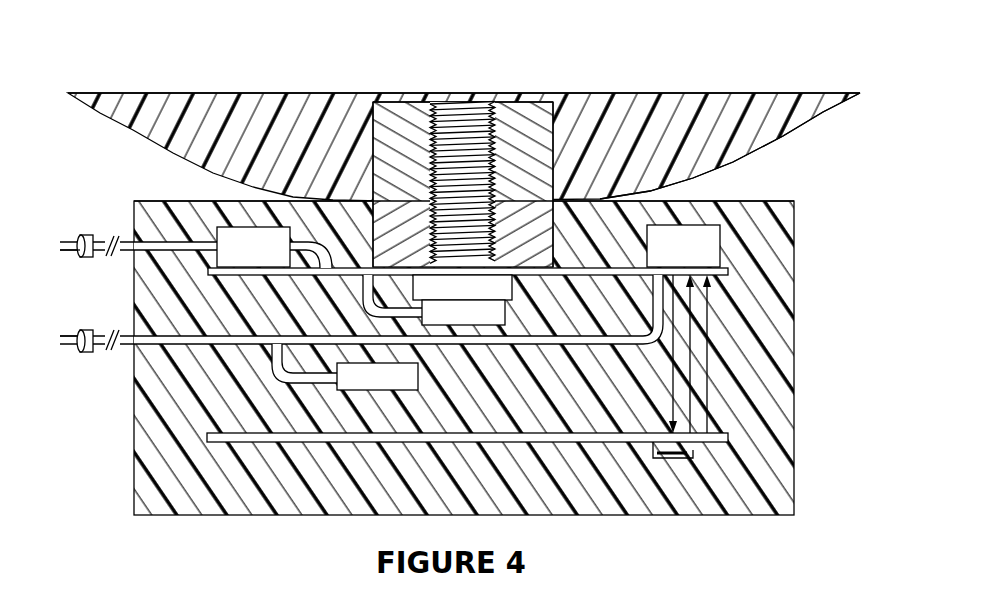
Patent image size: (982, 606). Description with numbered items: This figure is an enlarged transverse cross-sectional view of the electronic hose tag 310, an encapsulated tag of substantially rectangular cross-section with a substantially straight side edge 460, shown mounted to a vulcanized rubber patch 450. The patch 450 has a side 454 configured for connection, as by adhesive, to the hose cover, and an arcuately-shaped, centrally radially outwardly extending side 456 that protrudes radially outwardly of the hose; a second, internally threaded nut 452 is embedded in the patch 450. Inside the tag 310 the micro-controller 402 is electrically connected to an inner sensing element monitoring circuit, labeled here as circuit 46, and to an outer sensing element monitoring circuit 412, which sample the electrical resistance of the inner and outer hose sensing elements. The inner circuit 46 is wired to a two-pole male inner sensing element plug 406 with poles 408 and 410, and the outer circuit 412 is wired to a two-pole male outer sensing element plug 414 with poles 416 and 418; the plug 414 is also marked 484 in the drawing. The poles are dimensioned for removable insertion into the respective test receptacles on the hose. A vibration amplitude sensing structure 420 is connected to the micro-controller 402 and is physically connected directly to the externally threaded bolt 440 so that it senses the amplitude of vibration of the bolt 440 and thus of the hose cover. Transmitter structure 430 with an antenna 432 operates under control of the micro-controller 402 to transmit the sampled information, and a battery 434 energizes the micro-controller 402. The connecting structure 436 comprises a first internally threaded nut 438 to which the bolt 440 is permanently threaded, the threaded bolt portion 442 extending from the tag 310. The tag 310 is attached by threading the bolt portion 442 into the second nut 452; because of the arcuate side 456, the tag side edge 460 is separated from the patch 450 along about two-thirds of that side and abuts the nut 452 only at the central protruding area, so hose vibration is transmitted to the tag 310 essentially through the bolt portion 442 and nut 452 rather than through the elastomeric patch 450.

The electronic hose tag 310 is at (807, 232).
The vulcanized rubber patch 450 is at (697, 82).
The side of patch 454 is at (820, 92).
The arcuately-shaped side of patch 456 is at (796, 132).
The side edge of tag 460 is at (163, 201).
The micro-controller 402 is at (371, 196).
The connecting structure 436 is at (452, 68).
The second internally threaded nut 452 is at (354, 256).
The first internally threaded nut 438 is at (555, 242).
The threaded portion of bolt 442 is at (477, 131).
The externally threaded bolt 440 is at (500, 215).
The light source 46 is at (233, 247).
The outer sensing element monitoring circuit 412 is at (683, 246).
The vibration amplitude sensing structure 420 is at (437, 300).
The battery 434 is at (360, 392).
The transmitter structure 430 is at (367, 444).
The antenna 432 is at (672, 462).
The inner sensing element plug 406 is at (81, 212).
The pole of inner sensing element plug 408 is at (70, 242).
The pole of inner sensing element plug 410 is at (70, 255).
The outer sensing element plug 414 is at (85, 368).
The pole of outer sensing element plug 416 is at (70, 334).
The pole of outer sensing element plug 418 is at (70, 349).
The optical connector 484 is at (95, 397).